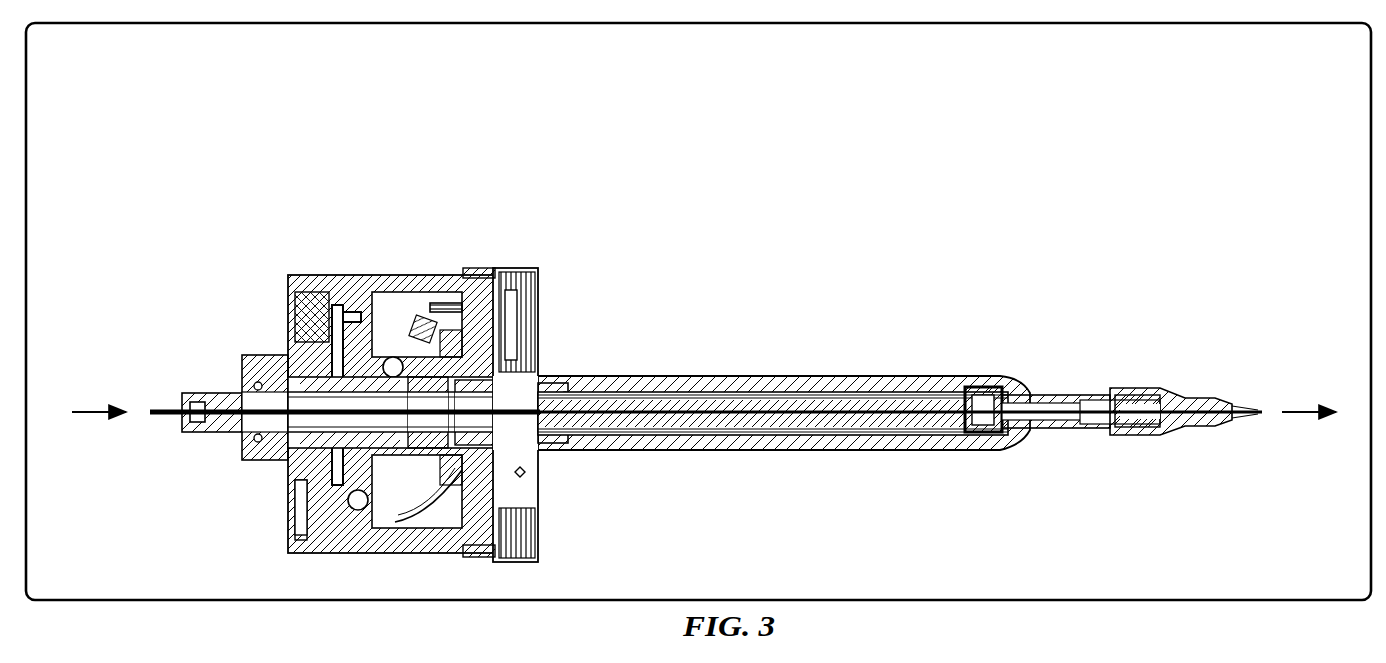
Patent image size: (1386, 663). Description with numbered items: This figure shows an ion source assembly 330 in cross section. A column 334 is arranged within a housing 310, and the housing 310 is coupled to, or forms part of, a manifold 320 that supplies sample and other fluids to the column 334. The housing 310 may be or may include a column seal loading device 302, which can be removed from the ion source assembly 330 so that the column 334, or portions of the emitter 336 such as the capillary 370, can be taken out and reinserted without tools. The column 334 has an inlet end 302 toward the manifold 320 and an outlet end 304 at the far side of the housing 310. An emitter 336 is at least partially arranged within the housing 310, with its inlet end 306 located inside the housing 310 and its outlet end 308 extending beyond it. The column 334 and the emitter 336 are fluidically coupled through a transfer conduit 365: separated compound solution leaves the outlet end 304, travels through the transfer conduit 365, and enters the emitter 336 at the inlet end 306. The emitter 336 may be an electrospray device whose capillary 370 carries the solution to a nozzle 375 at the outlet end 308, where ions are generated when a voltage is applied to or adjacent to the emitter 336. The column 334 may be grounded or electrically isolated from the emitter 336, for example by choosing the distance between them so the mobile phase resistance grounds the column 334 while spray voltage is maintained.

The ion source assembly 330 is at (704, 312).
The manifold 320 is at (410, 269).
The column seal loading device 302 is at (517, 508).
The housing 310 is at (853, 371).
The transfer conduit 365 is at (983, 372).
The emitter 336 is at (1089, 373).
The nozzle 375 is at (1226, 375).
The outlet end 304 is at (925, 437).
The inlet end 306 is at (972, 437).
The outlet end 308 is at (1192, 437).
The column 334 is at (806, 436).
The capillary 370 is at (1060, 430).